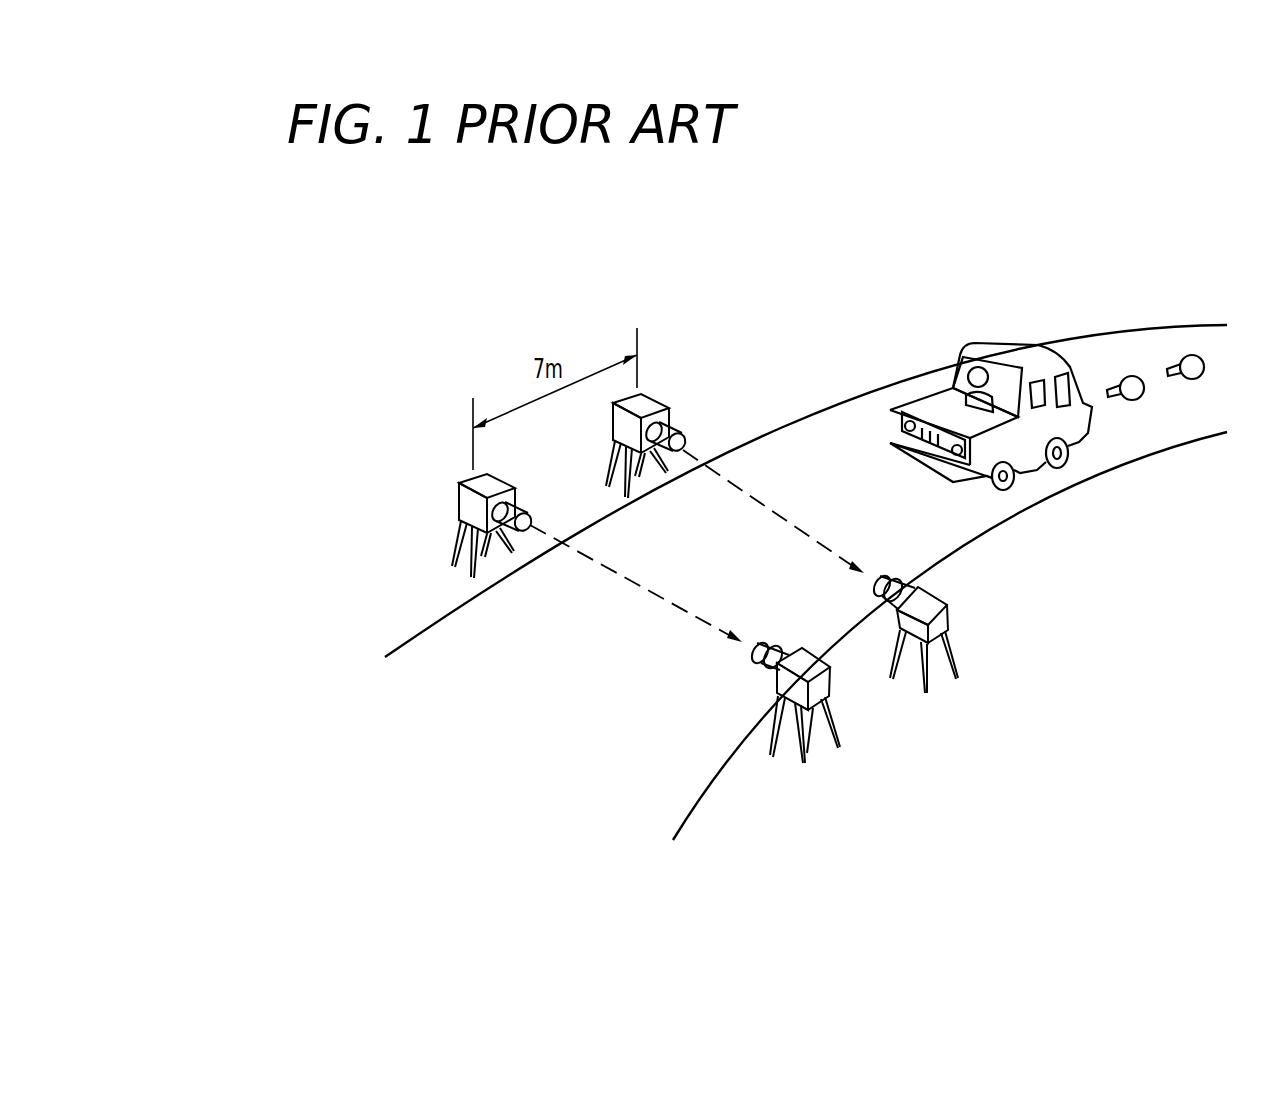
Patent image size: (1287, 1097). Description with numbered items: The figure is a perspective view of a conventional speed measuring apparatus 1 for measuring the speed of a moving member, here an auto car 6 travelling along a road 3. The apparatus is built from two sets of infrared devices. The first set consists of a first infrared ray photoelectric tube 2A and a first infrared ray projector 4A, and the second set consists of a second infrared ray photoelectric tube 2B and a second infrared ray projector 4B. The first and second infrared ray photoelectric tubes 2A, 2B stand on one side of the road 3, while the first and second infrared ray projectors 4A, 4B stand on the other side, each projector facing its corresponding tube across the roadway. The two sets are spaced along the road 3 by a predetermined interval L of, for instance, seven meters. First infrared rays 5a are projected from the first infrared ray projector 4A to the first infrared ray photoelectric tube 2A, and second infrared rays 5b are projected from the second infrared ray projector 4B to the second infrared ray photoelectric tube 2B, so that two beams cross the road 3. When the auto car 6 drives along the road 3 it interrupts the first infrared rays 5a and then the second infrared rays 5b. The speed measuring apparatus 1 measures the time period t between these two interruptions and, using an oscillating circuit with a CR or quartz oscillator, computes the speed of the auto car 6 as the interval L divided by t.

The speed measuring apparatus 1 is at (897, 132).
The first infrared ray photoelectric tube 2A is at (968, 665).
The second infrared ray photoelectric tube 2B is at (827, 752).
The road 3 is at (683, 763).
The first infrared ray projector 4A is at (652, 406).
The second infrared ray projector 4B is at (455, 500).
The first infrared rays 5a is at (827, 543).
The second infrared rays 5b is at (650, 598).
The auto car 6 is at (1017, 353).